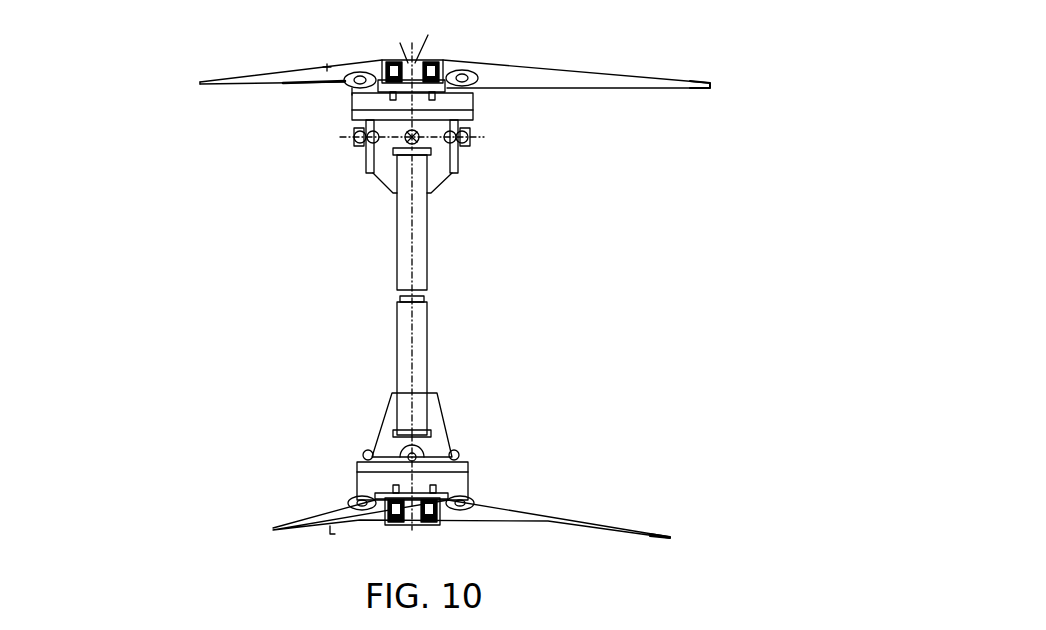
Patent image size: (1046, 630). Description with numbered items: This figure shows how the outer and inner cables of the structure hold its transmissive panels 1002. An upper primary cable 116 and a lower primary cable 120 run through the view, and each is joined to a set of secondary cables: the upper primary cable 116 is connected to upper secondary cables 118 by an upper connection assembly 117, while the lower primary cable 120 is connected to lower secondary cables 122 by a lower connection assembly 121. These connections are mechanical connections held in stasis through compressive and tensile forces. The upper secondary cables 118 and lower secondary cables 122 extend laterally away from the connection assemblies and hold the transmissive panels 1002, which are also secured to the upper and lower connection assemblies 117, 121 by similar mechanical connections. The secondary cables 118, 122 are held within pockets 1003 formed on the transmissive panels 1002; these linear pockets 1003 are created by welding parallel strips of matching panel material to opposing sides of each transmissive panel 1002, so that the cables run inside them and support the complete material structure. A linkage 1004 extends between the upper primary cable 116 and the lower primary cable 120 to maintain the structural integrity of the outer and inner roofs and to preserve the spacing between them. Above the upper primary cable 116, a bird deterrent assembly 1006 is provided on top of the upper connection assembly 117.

The transmissive panel 1002 is at (561, 73).
The pocket 1003 is at (680, 88).
The linkage 1004 is at (400, 244).
The bird deterrent assembly 1006 is at (398, 42).
The upper primary cable 116 is at (417, 135).
The upper connection assembly 117 is at (357, 98).
The upper secondary cable 118 is at (521, 88).
The lower primary cable 120 is at (412, 457).
The lower connection assembly 121 is at (357, 484).
The lower secondary cable 122 is at (536, 516).